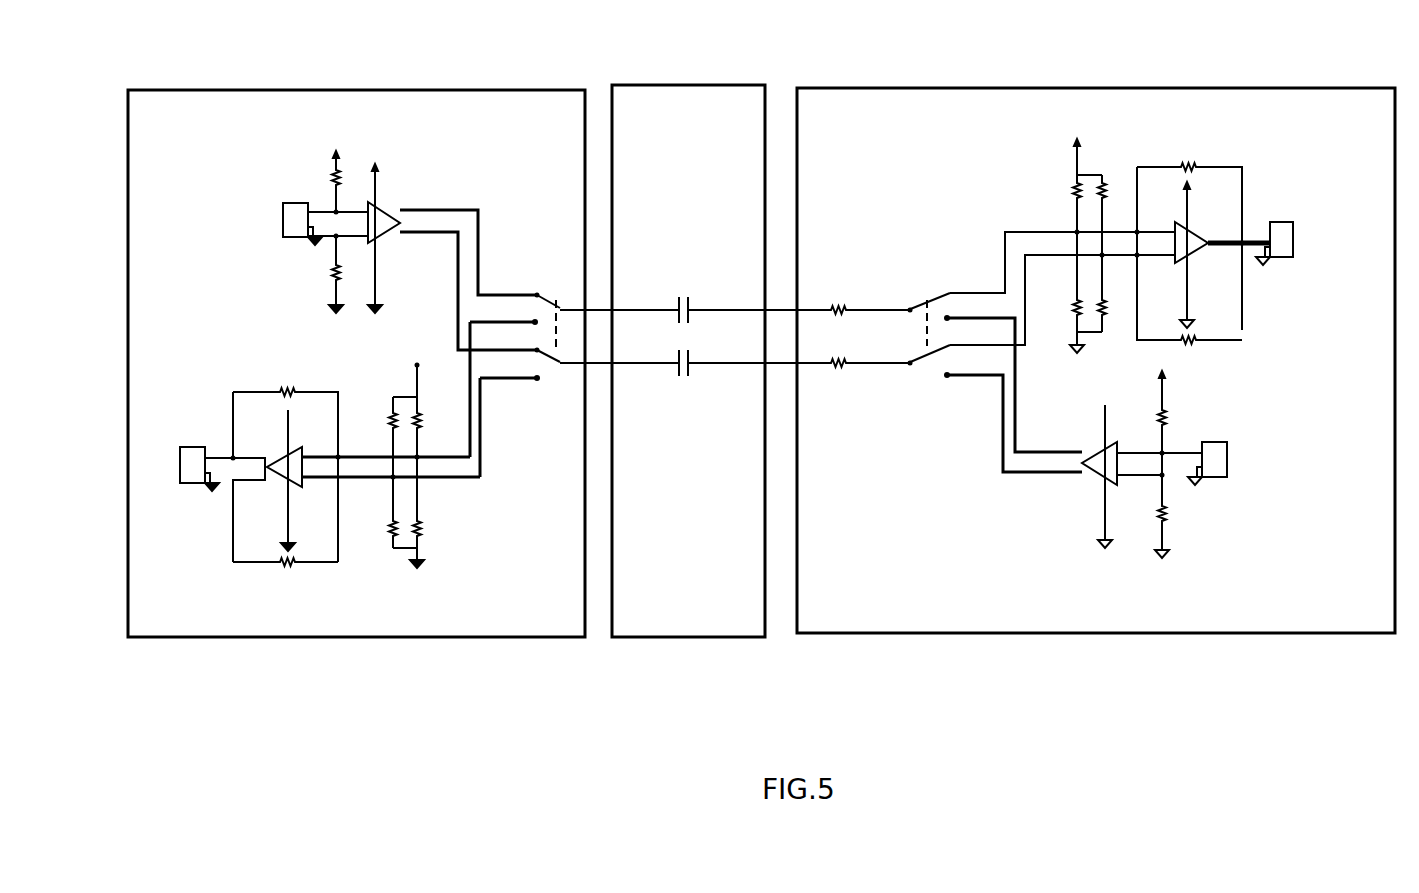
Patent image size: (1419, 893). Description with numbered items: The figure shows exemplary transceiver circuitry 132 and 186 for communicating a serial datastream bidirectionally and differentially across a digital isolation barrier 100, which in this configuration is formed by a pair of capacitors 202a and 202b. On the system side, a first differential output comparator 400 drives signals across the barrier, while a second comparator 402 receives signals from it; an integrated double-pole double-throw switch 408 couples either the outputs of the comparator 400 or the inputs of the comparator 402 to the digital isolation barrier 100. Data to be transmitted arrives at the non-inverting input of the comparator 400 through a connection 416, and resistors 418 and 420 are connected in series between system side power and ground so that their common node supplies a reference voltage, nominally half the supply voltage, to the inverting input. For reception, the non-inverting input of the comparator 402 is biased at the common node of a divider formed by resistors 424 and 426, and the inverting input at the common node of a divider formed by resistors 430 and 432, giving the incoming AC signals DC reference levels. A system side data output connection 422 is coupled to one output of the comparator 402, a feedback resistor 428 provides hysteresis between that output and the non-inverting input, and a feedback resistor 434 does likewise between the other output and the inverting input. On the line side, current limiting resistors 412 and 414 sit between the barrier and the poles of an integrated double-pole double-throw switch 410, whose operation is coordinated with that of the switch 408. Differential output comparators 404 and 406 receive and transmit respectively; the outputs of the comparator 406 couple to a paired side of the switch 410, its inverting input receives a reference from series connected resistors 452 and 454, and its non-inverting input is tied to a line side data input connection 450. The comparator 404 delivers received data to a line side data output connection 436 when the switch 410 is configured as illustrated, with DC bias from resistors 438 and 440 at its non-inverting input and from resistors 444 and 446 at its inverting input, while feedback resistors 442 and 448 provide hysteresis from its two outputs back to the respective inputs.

The transceiver circuitry 132 is at (463, 87).
The digital isolation barrier 100 is at (755, 82).
The transceiver circuitry 186 is at (1113, 85).
The connection 416 is at (295, 202).
The resistor 418 is at (343, 172).
The resistor 420 is at (330, 277).
The first differential output comparator 400 is at (383, 208).
The integrated double-pole double-throw switch 408 is at (540, 293).
The capacitor 202a is at (686, 291).
The capacitor 202b is at (686, 380).
The current limiting resistor 412 is at (838, 301).
The current limiting resistor 414 is at (838, 369).
The integrated double-pole double-throw switch 410 is at (923, 303).
The resistor 438 is at (1073, 200).
The resistor 444 is at (1106, 197).
The resistor 440 is at (1073, 312).
The resistor 446 is at (1107, 310).
The differential output comparator 404 is at (1192, 225).
The feedback resistor 442 is at (1188, 162).
The feedback resistor 448 is at (1190, 344).
The line side data output connection 436 is at (1288, 218).
The differential output comparator 406 is at (1095, 476).
The resistor 452 is at (1170, 420).
The resistor 454 is at (1170, 517).
The line side data input connection 450 is at (1228, 448).
The system side data output connection 422 is at (193, 443).
The second comparator 402 is at (280, 478).
The feedback resistor 428 is at (283, 383).
The feedback resistor 434 is at (287, 572).
The resistor 430 is at (382, 422).
The resistor 424 is at (422, 422).
The resistor 432 is at (388, 530).
The resistor 426 is at (422, 528).